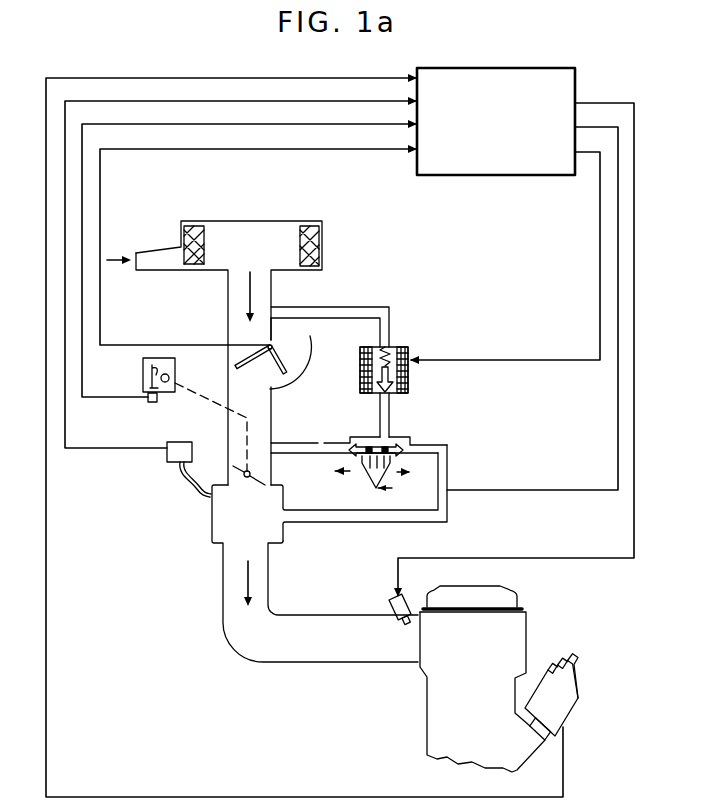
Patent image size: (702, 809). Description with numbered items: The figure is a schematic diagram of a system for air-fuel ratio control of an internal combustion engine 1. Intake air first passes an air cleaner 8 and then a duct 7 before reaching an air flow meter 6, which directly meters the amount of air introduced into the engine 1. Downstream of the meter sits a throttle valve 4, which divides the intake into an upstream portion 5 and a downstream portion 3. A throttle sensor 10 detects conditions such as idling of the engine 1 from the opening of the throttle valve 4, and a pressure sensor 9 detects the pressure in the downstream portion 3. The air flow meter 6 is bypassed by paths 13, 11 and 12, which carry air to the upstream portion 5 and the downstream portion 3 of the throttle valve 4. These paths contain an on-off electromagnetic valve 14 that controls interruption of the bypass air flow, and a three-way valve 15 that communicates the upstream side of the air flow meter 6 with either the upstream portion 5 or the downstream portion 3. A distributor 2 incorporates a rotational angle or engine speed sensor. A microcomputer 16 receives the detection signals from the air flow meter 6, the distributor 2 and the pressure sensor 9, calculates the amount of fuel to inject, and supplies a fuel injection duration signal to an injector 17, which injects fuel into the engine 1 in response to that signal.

The internal combustion engine 1 is at (525, 632).
The distributor 2 is at (580, 697).
The downstream portion of the throttle valve 3 is at (220, 512).
The throttle valve 4 is at (236, 466).
The upstream portion of the throttle valve 5 is at (267, 397).
The air flow meter 6 is at (287, 343).
The duct 7 is at (263, 290).
The air cleaner 8 is at (320, 249).
The pressure sensor 9 is at (166, 455).
The throttle sensor 10 is at (175, 365).
The path 11 is at (322, 448).
The path 12 is at (447, 465).
The path 13 is at (367, 308).
The on-off electromagnetic valve 14 is at (398, 345).
The three-way valve 15 is at (403, 437).
The microcomputer 16 is at (441, 68).
The injector 17 is at (392, 603).